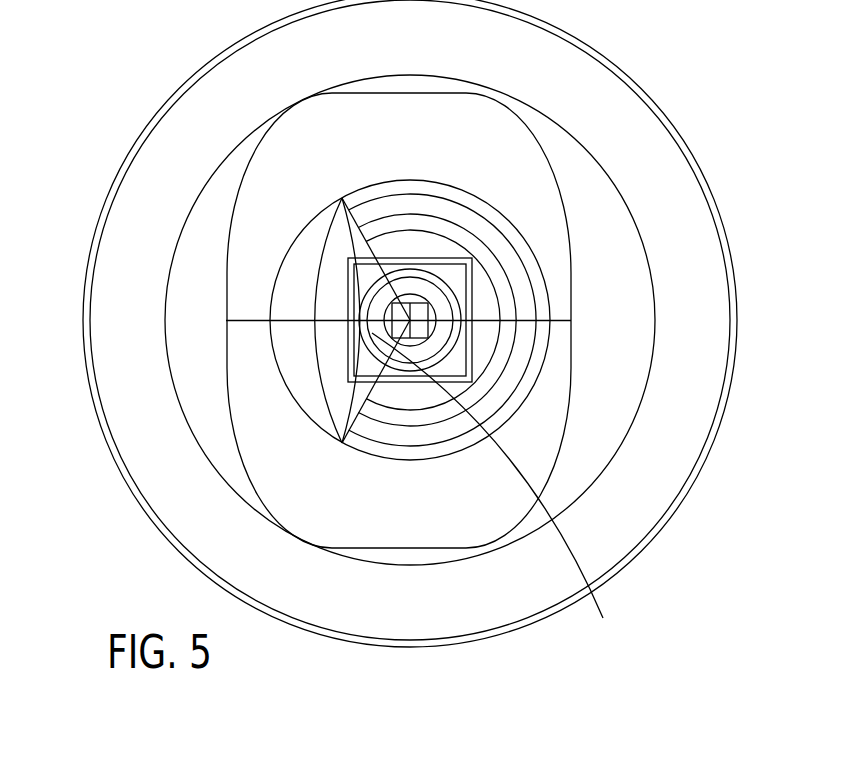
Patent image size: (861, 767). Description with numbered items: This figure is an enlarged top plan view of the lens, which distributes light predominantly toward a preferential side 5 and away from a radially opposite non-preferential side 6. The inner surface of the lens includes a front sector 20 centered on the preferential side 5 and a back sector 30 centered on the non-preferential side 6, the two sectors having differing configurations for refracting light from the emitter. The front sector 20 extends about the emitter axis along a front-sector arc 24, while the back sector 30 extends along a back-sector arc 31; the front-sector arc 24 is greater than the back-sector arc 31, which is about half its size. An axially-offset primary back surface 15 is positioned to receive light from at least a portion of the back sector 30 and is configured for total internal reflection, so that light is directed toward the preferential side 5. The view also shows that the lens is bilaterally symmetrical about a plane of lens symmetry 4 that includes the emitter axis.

The plane of lens symmetry 4 is at (570, 287).
The preferential side 5 is at (776, 321).
The non-preferential side 6 is at (56, 320).
The primary back surface 15 is at (342, 443).
The front sector 20 is at (482, 298).
The front-sector arc 24 is at (530, 246).
The back sector 30 is at (502, 490).
The back-sector arc 31 is at (297, 240).